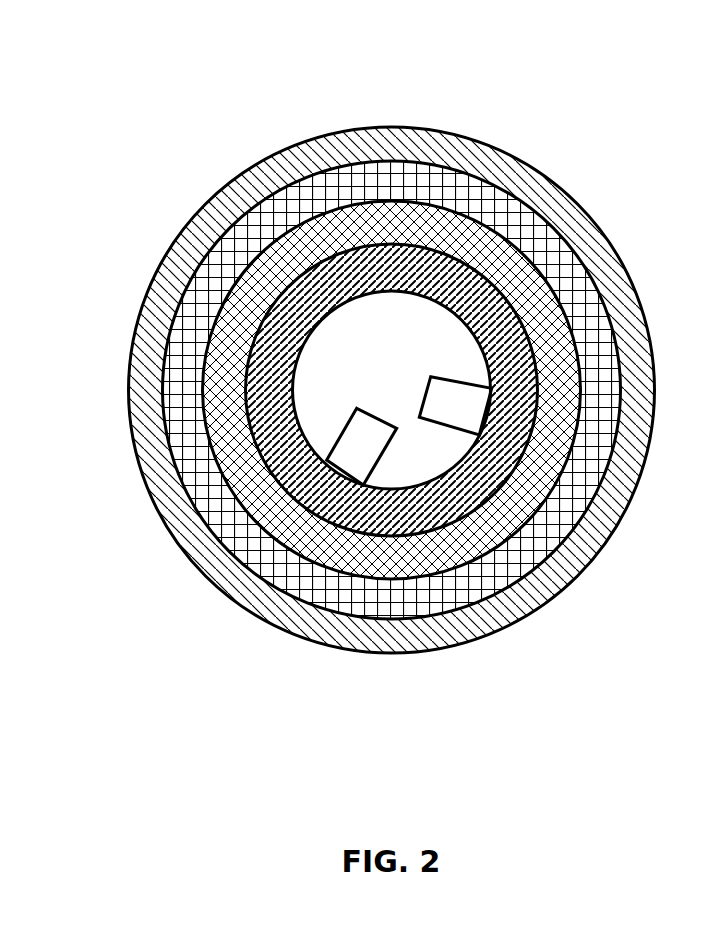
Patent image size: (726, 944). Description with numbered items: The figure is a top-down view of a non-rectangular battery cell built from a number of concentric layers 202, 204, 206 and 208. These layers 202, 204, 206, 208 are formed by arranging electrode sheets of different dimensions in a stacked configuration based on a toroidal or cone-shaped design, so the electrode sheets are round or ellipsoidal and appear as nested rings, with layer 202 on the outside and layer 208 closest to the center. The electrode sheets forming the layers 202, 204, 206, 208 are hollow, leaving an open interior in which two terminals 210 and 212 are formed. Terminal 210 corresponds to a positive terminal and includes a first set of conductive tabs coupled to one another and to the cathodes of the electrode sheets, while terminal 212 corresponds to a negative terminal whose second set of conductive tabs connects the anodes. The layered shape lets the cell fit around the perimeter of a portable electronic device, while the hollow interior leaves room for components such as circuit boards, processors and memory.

The layer 202 is at (448, 633).
The layer 204 is at (523, 552).
The layer 206 is at (555, 438).
The layer 208 is at (280, 462).
The terminal 210 is at (355, 447).
The terminal 212 is at (467, 408).